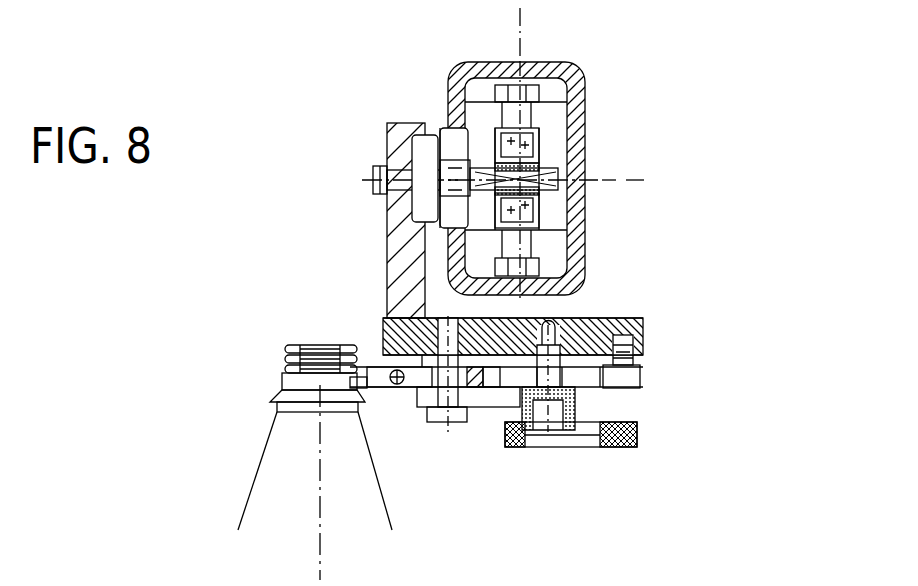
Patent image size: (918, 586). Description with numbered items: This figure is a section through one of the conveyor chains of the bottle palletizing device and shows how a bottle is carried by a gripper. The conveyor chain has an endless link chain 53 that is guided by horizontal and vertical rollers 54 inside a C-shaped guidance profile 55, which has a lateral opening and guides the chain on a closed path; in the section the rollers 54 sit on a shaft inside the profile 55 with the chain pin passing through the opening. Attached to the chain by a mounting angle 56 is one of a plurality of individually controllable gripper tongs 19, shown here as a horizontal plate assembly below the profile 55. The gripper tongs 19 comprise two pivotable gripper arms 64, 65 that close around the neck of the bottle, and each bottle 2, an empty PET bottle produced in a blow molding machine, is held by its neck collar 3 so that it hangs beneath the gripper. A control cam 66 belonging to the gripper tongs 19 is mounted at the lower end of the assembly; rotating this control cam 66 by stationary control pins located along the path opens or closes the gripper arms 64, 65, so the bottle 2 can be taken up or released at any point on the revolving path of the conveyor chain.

The bottle 2 is at (270, 452).
The neck collar 3 is at (272, 397).
The gripper tongs 19 is at (368, 346).
The endless link chain 53 is at (573, 164).
The rollers 54 is at (483, 118).
The C-shaped guidance profile 55 is at (597, 62).
The mounting angle 56 is at (641, 318).
The gripper arm 64 is at (382, 373).
The gripper arm 65 is at (504, 467).
The control cam 66 is at (577, 398).